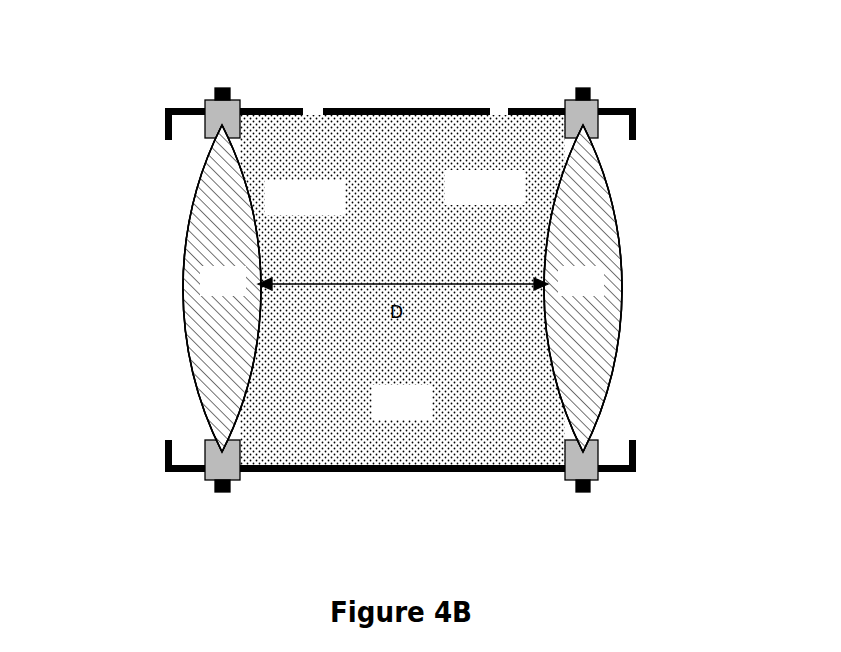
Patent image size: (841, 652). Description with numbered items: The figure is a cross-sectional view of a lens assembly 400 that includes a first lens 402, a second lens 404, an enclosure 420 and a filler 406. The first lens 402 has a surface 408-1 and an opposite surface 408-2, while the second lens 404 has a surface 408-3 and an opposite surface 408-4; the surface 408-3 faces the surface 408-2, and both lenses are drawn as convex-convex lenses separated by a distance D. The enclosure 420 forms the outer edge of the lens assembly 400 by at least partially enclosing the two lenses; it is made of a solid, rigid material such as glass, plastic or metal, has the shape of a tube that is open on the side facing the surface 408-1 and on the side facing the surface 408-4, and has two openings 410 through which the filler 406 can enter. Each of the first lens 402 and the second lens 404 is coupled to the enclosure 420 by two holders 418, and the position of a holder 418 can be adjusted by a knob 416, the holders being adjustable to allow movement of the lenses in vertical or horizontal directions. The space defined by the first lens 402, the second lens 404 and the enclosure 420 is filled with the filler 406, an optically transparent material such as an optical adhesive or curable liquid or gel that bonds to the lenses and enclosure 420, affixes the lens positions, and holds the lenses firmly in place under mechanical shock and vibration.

The lens assembly 400 is at (118, 58).
The first lens 402 is at (225, 290).
The second lens 404 is at (585, 290).
The filler 406 is at (402, 290).
The surface 408-1 is at (194, 195).
The surface 408-2 is at (252, 200).
The surface 408-3 is at (552, 196).
The surface 408-4 is at (615, 192).
The openings 410 is at (311, 80).
The knob 416 is at (225, 88).
The holders 418 is at (215, 110).
The enclosure 420 is at (352, 110).